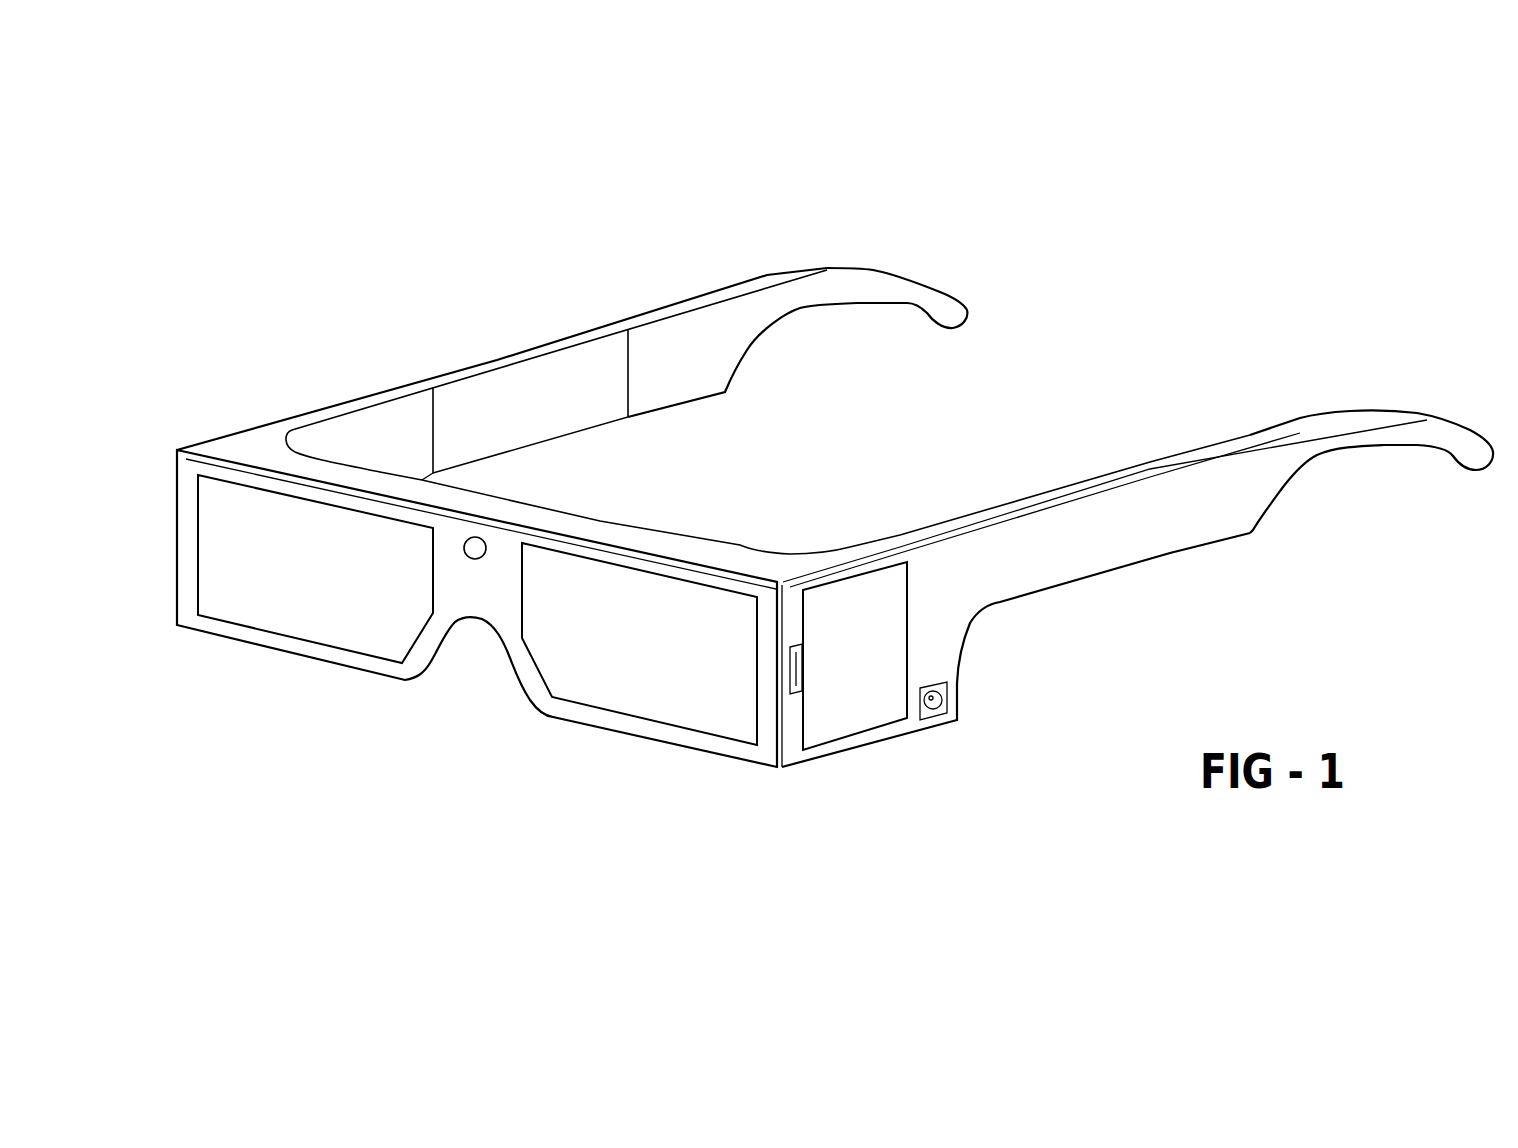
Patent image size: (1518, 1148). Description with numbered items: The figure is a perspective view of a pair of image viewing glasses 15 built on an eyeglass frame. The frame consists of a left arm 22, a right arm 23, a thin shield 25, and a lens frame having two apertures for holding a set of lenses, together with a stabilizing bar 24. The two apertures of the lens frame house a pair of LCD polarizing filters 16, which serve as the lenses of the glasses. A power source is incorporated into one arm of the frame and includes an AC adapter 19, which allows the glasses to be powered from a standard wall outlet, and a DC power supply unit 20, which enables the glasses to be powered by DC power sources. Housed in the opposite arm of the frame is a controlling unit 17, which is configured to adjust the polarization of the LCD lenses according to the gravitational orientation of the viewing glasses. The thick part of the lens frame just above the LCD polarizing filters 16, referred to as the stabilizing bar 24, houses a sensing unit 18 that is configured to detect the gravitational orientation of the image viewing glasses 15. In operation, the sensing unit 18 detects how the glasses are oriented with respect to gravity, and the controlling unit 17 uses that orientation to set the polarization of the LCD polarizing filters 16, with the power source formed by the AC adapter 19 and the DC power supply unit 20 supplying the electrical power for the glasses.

The image viewing glasses 15 is at (371, 788).
The LCD polarizing filters 16 is at (317, 600).
The controlling unit 17 is at (607, 345).
The sensing unit 18 is at (468, 542).
The AC adapter 19 is at (937, 703).
The DC power supply unit 20 is at (855, 718).
The left arm 22 is at (1312, 438).
The right arm 23 is at (800, 285).
The stabilizing bar 24 is at (700, 548).
The thin shield 25 is at (258, 437).